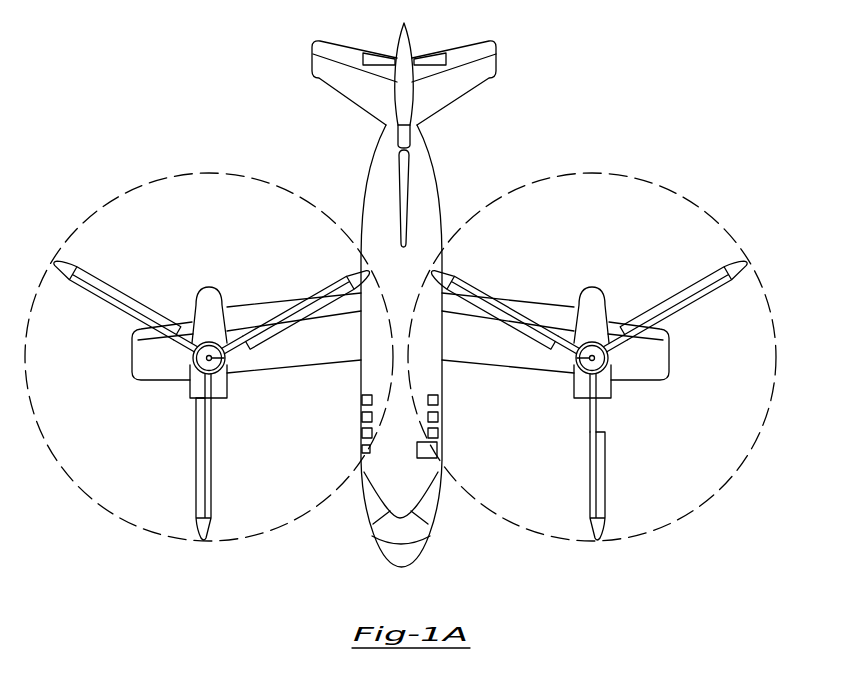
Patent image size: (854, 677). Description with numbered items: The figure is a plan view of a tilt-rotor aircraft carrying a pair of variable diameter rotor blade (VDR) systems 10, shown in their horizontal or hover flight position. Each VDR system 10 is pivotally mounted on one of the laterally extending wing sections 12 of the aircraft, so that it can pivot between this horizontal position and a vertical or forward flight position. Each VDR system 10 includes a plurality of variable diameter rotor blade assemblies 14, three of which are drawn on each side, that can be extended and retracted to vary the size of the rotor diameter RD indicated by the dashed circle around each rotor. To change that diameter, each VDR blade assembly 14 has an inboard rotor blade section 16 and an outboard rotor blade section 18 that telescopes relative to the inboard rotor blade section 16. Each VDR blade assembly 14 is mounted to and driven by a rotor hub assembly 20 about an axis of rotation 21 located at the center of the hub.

The variable diameter rotor blade (VDR) system 10 is at (101, 460).
The rotor diameter RD is at (602, 174).
The wing section 12 is at (298, 356).
The variable diameter rotor blade assembly 14 is at (400, 383).
The inboard rotor blade section 16 is at (264, 318).
The outboard rotor blade section 18 is at (92, 283).
The rotor hub assembly 20 is at (228, 367).
The axis of rotation 21 is at (193, 362).